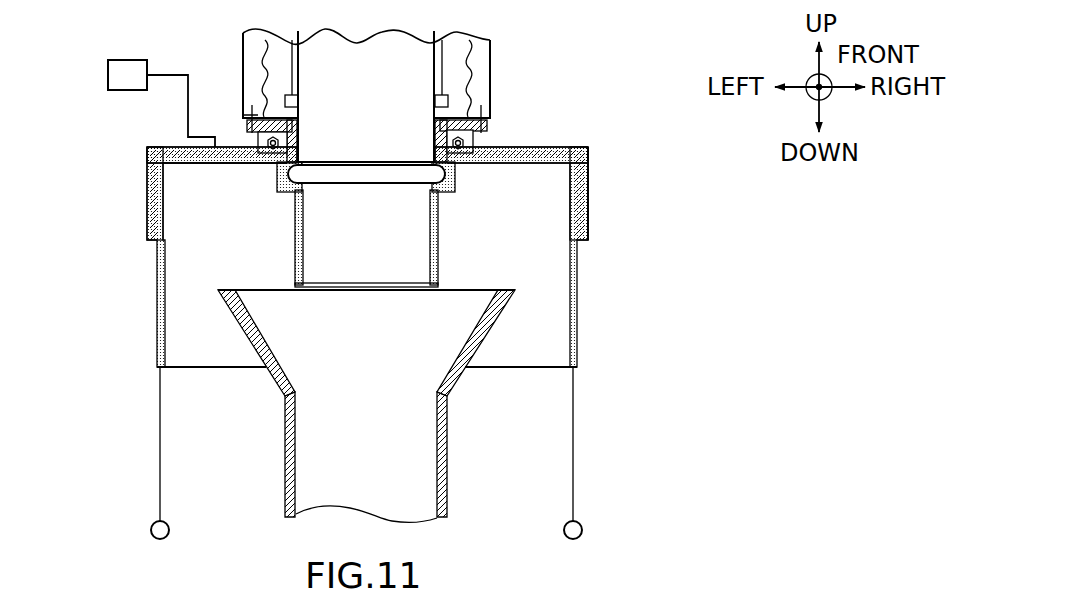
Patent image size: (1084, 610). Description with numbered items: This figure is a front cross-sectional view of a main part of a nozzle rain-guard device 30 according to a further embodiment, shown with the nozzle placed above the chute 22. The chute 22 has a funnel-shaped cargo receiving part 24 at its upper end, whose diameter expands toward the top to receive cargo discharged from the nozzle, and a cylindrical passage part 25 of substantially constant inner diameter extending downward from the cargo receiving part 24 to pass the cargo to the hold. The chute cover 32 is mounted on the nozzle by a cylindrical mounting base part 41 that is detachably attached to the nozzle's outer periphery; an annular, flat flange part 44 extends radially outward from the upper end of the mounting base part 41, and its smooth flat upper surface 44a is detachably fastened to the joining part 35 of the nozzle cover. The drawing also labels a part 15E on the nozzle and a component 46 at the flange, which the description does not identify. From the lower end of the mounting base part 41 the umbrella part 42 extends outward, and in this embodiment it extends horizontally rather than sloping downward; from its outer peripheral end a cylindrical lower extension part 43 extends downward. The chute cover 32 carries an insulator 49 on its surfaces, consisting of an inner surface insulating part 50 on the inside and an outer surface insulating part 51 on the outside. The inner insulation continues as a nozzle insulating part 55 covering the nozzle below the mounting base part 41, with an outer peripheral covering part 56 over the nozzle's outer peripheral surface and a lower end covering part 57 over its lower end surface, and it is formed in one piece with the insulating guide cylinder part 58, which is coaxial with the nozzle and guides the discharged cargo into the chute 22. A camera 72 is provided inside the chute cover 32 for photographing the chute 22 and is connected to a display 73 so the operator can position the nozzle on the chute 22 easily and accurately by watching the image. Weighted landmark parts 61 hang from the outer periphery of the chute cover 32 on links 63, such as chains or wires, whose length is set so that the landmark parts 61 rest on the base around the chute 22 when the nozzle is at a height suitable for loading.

The nozzle rain-guard device 30 is at (375, 86).
The nozzle body 15E is at (370, 88).
The upper surface 44a is at (258, 117).
The flange part 44 is at (490, 126).
The mounting base part 41 is at (252, 135).
The joining part 35 is at (488, 124).
The nut 46 is at (258, 144).
The display 73 is at (108, 75).
The chute cover 32 is at (348, 209).
The umbrella part 42 is at (182, 147).
The lower extension part 43 is at (148, 213).
The insulator 49 is at (569, 146).
The outer surface insulating part 51 is at (590, 177).
The inner surface insulating part 50 is at (547, 170).
The camera 72 is at (210, 163).
The lower end covering part 57 is at (381, 224).
The nozzle insulating part 55 is at (281, 192).
The outer peripheral covering part 56 is at (455, 183).
The guide cylinder part 58 is at (342, 273).
The chute 22 is at (386, 406).
The cargo receiving part 24 is at (458, 377).
The passage part 25 is at (448, 475).
The link 63 is at (160, 433).
The landmark part 61 is at (151, 532).